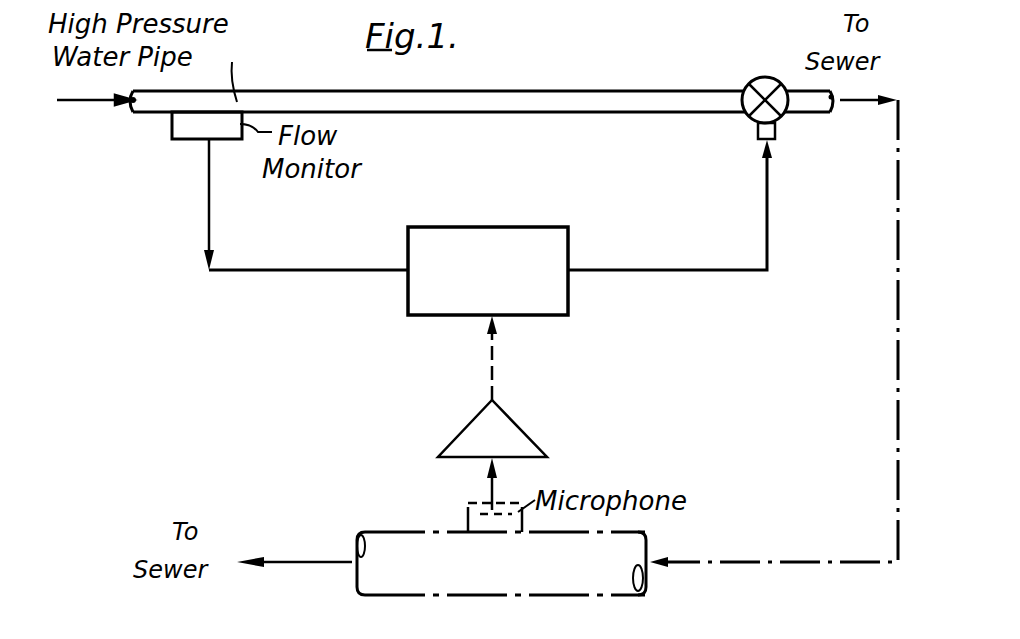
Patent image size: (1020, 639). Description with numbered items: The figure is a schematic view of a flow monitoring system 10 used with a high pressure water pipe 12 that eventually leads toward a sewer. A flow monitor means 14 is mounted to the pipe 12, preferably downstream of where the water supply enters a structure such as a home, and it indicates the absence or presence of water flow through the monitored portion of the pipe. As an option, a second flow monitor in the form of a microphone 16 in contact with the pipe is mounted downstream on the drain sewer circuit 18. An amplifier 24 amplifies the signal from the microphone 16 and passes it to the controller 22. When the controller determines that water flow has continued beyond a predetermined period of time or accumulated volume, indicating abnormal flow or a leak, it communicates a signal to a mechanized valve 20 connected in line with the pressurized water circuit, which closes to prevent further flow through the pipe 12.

The flow monitoring system 10 is at (158, 322).
The high pressure water pipe 12 is at (345, 81).
The flow monitor means 14 is at (197, 128).
The microphone 16 is at (470, 514).
The drain sewer circuit 18 is at (582, 572).
The mechanized valve 20 is at (763, 88).
The controller 22 is at (540, 240).
The amplifier 24 is at (500, 412).